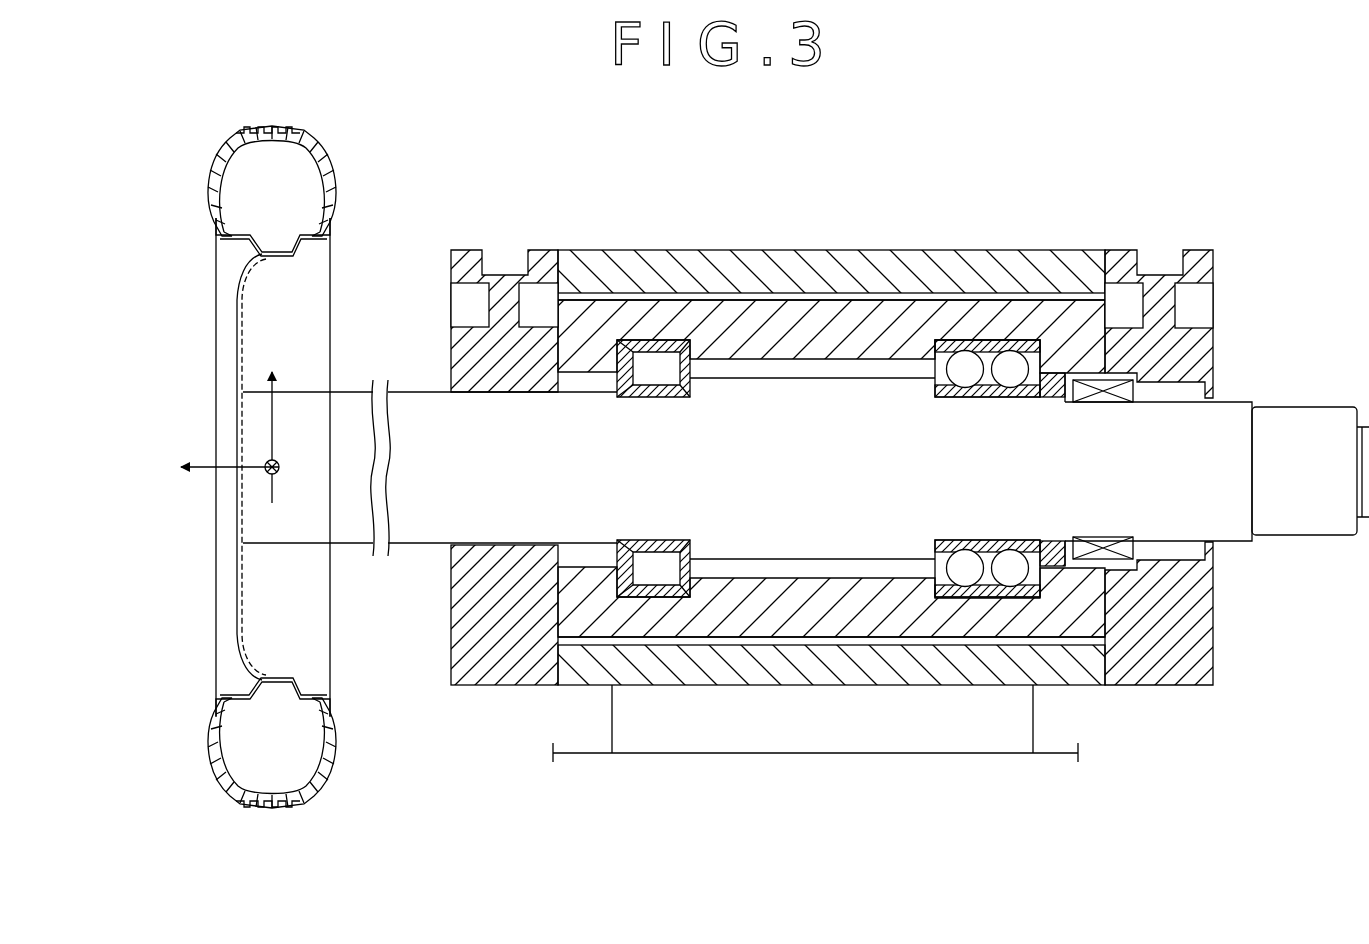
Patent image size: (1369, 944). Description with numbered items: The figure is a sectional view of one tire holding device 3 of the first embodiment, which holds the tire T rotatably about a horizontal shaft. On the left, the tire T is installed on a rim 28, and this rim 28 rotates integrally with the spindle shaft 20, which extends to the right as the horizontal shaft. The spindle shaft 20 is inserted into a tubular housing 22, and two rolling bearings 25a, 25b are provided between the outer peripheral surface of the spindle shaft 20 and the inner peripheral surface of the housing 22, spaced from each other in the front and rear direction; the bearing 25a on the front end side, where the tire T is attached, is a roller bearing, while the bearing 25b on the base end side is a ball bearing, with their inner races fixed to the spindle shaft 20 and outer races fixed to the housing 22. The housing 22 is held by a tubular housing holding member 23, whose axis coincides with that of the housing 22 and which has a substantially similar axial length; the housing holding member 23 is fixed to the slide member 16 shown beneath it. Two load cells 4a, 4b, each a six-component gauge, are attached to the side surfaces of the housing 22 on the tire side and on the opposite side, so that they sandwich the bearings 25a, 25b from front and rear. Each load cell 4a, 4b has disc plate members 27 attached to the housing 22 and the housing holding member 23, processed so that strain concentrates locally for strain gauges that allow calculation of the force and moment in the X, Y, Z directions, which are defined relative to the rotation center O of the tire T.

The tire holding device 3 is at (962, 236).
The load cell 4a is at (508, 272).
The load cell 4b is at (1220, 311).
The slide member 16 is at (818, 756).
The spindle shaft 20 is at (1297, 421).
The housing 22 is at (904, 315).
The housing holding member 23 is at (828, 270).
The bearing 25a is at (660, 336).
The bearing 25b is at (1017, 336).
The plate member 27 is at (482, 673).
The rim 28 is at (338, 228).
The tire T is at (322, 152).
The rotation center O is at (277, 463).